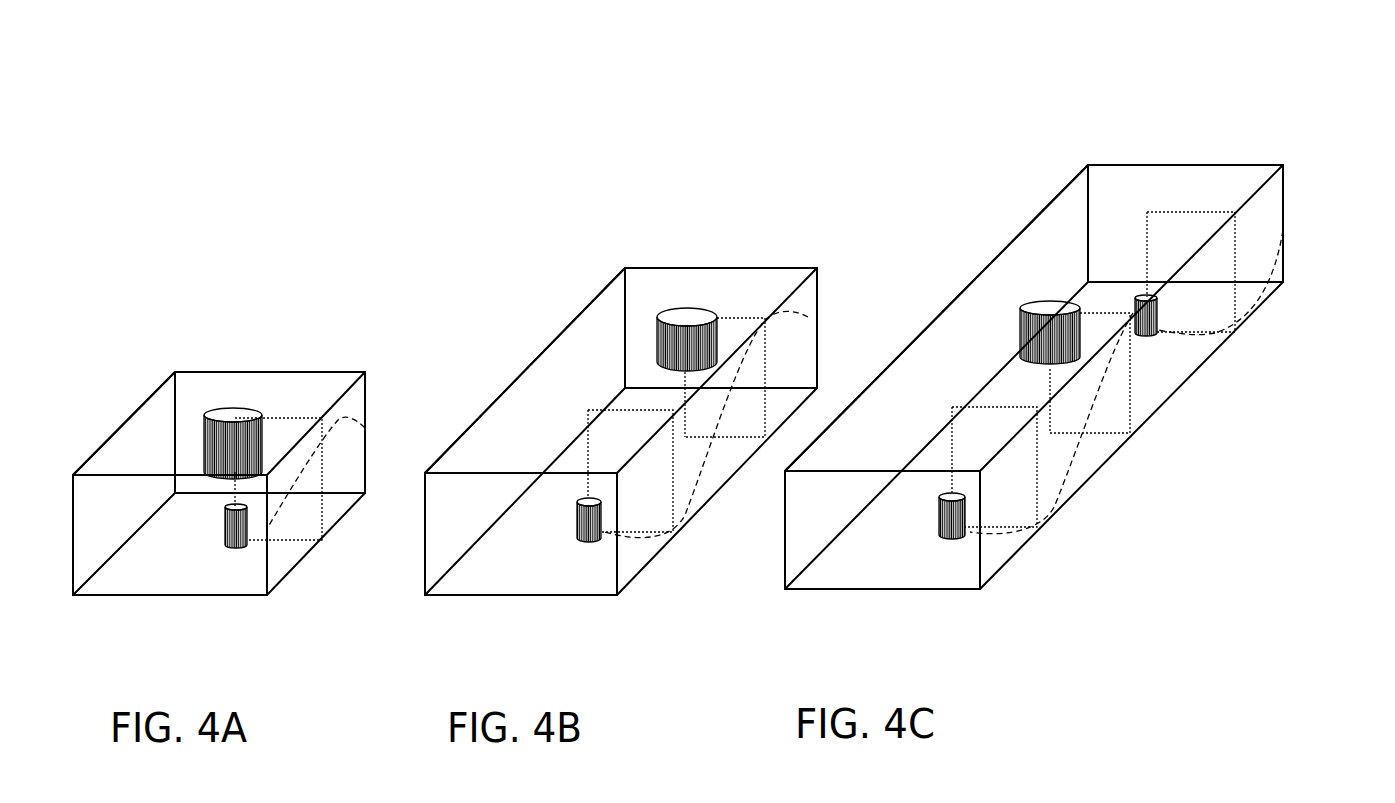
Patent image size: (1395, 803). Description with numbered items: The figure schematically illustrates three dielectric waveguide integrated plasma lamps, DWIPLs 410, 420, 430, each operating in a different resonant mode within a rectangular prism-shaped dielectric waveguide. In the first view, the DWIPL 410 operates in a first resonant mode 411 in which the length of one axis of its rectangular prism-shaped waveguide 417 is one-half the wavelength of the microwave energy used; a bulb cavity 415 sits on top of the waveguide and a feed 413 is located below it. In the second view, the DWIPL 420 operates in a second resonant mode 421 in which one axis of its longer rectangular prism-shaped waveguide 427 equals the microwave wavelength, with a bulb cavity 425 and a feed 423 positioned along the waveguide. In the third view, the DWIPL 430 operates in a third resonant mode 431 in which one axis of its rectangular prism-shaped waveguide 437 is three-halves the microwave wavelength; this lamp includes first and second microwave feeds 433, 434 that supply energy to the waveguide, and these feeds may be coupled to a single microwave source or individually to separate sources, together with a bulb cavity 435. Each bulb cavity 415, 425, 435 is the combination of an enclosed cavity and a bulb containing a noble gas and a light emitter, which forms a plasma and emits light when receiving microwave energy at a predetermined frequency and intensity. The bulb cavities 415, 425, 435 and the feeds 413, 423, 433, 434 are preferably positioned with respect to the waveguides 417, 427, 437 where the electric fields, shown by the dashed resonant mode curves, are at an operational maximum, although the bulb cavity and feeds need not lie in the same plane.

In FIG. 4A, the DWIPL 410 is at (148, 363).
In FIG. 4A, the first resonant mode 411 is at (347, 418).
In FIG. 4A, the feed 413 is at (243, 542).
In FIG. 4A, the bulb cavity 415 is at (235, 403).
In FIG. 4A, the rectangular prism-shaped waveguide 417 is at (117, 430).
In FIG. 4B, the DWIPL 420 is at (709, 224).
In FIG. 4B, the second resonant mode 421 is at (810, 320).
In FIG. 4B, the feed 423 is at (590, 546).
In FIG. 4B, the bulb cavity 425 is at (696, 300).
In FIG. 4B, the rectangular prism-shaped waveguide 427 is at (607, 288).
In FIG. 4C, the DWIPL 430 is at (1042, 173).
In FIG. 4C, the third resonant mode 431 is at (1274, 256).
In FIG. 4C, the first microwave feed 433 is at (953, 543).
In FIG. 4C, the second microwave feed 434 is at (1150, 338).
In FIG. 4C, the bulb cavity 435 is at (1034, 299).
In FIG. 4C, the rectangular prism-shaped waveguide 437 is at (1173, 163).